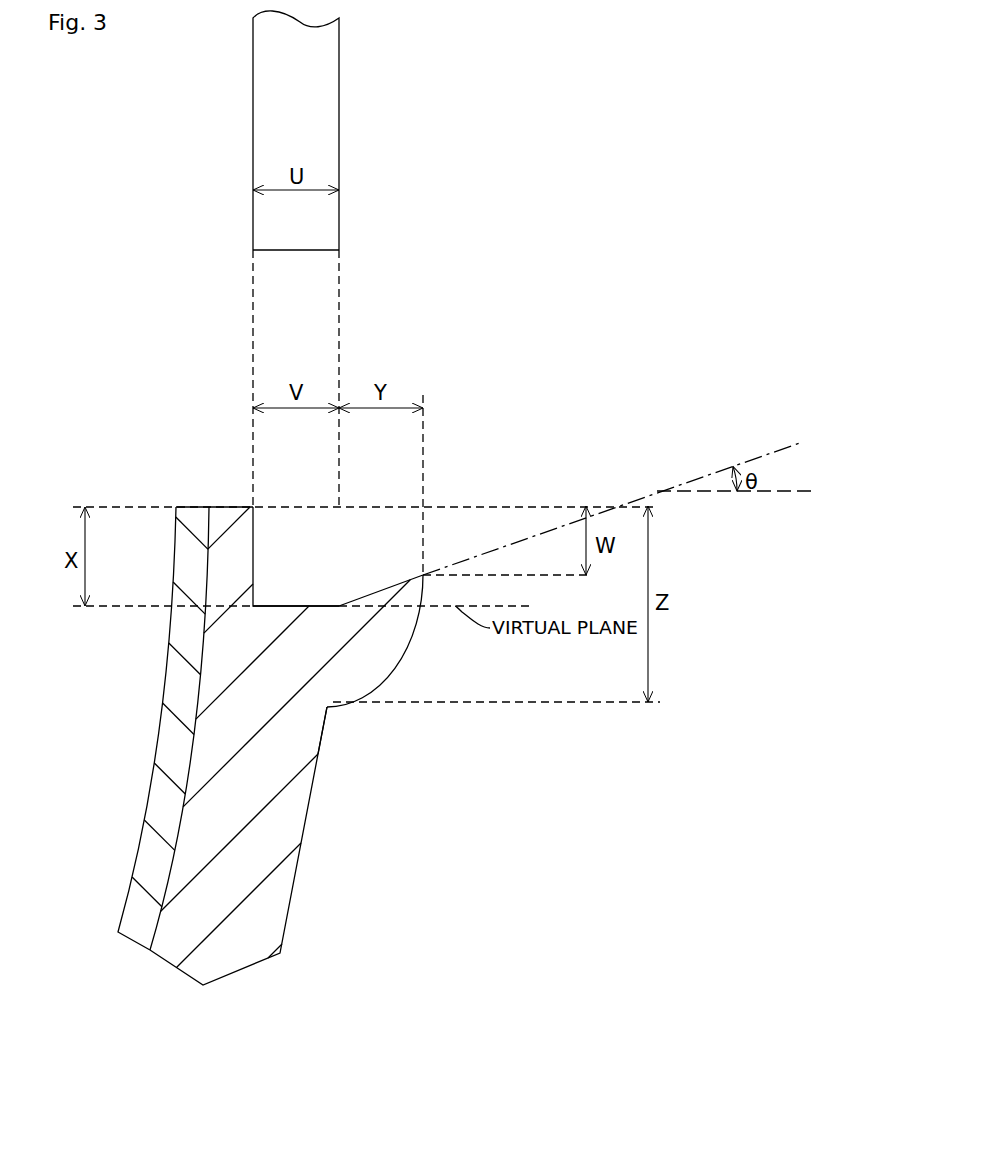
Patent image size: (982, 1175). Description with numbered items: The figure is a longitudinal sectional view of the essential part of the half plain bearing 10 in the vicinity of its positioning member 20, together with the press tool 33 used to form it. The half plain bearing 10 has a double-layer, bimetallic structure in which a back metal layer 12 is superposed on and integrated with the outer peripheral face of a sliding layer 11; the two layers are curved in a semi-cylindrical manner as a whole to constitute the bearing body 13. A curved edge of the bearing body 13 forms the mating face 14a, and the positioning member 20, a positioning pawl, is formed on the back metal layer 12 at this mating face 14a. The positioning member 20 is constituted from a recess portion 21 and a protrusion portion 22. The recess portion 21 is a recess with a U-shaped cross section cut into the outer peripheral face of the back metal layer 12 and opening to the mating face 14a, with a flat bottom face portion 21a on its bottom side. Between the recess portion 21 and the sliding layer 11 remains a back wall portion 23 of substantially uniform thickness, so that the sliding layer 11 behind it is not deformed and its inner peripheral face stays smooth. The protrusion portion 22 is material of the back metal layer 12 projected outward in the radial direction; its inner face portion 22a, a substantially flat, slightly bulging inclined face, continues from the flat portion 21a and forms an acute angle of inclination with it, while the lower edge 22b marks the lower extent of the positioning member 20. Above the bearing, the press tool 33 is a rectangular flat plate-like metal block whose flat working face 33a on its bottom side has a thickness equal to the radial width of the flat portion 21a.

The half plain bearing 10 is at (150, 406).
The sliding layer 11 is at (133, 943).
The back metal layer 12 is at (160, 958).
The bearing body 13 is at (84, 968).
The mating face 14a is at (190, 505).
The positioning member 20 is at (442, 482).
The recess portion 21 is at (254, 530).
The flat bottom face portion 21a is at (281, 604).
The protrusion portion 22 is at (404, 642).
The inner face portion 22a is at (363, 590).
The lower edge 22b is at (336, 712).
The back wall portion 23 is at (230, 507).
The press tool 33 is at (333, 50).
The working face 33a is at (312, 256).